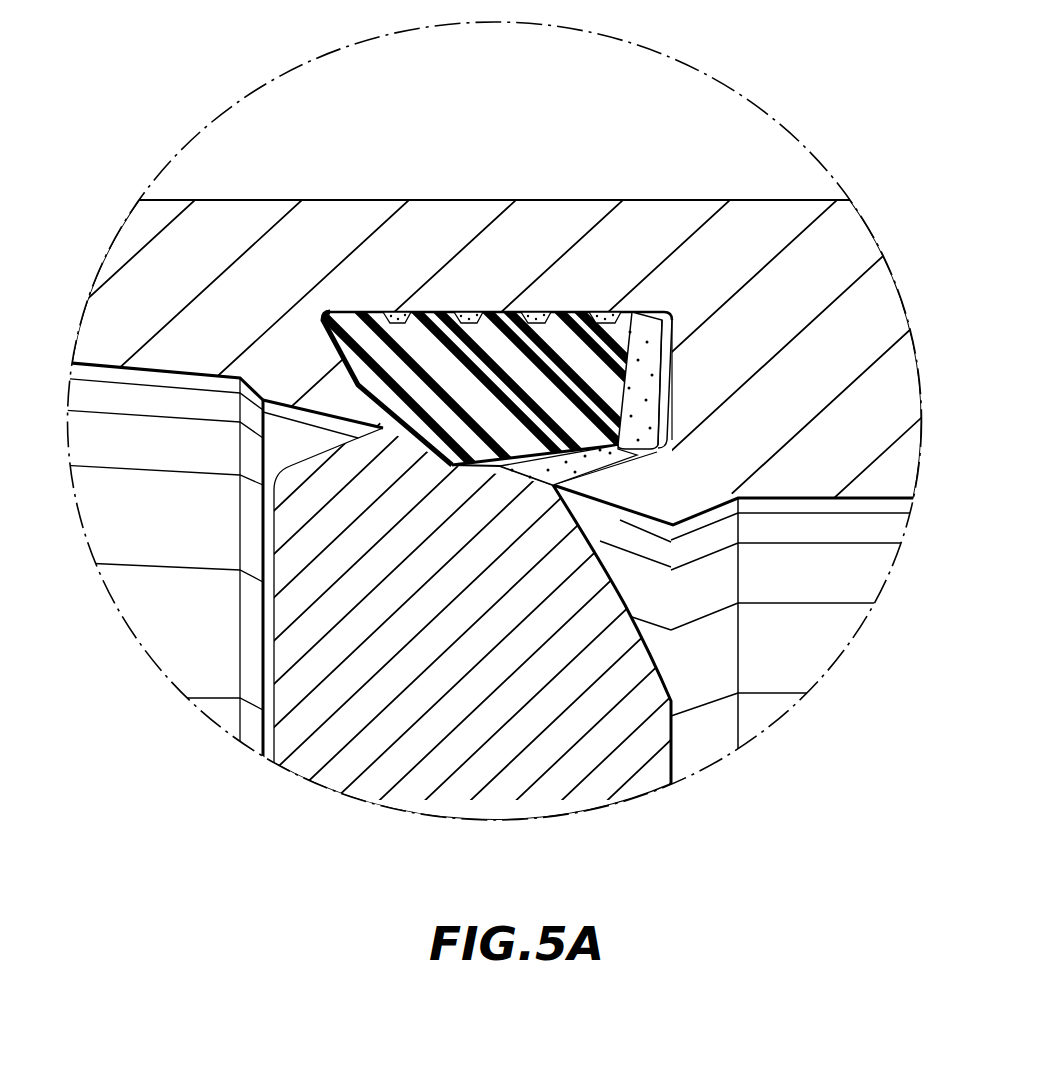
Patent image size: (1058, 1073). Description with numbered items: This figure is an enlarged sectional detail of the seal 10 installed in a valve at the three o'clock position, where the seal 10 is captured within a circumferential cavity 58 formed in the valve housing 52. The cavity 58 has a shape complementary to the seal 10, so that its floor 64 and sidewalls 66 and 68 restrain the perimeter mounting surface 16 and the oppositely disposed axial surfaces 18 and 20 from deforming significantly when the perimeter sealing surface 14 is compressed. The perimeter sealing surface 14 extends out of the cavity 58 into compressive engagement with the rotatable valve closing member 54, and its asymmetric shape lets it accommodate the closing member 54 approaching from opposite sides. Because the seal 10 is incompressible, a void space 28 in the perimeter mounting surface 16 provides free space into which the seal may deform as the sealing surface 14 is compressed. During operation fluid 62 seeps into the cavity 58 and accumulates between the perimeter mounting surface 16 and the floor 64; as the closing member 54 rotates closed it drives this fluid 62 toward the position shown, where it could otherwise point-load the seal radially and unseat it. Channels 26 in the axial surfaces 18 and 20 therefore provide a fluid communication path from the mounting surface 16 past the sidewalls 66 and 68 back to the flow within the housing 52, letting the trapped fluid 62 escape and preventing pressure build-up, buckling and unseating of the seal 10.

The seal 10 is at (479, 358).
The perimeter sealing surface 14 is at (415, 450).
The perimeter mounting surface 16 is at (363, 312).
The axially facing surface 18 is at (322, 352).
The axially facing surface 20 is at (667, 393).
The channels 26 is at (652, 347).
The void space 28 is at (477, 290).
The valve housing 52 is at (243, 217).
The valve closing member 54 is at (468, 674).
The circumferential cavity 58 is at (668, 420).
The fluid 62 is at (610, 312).
The floor 64 is at (532, 312).
The sidewall 66 is at (341, 403).
The sidewall 68 is at (600, 478).